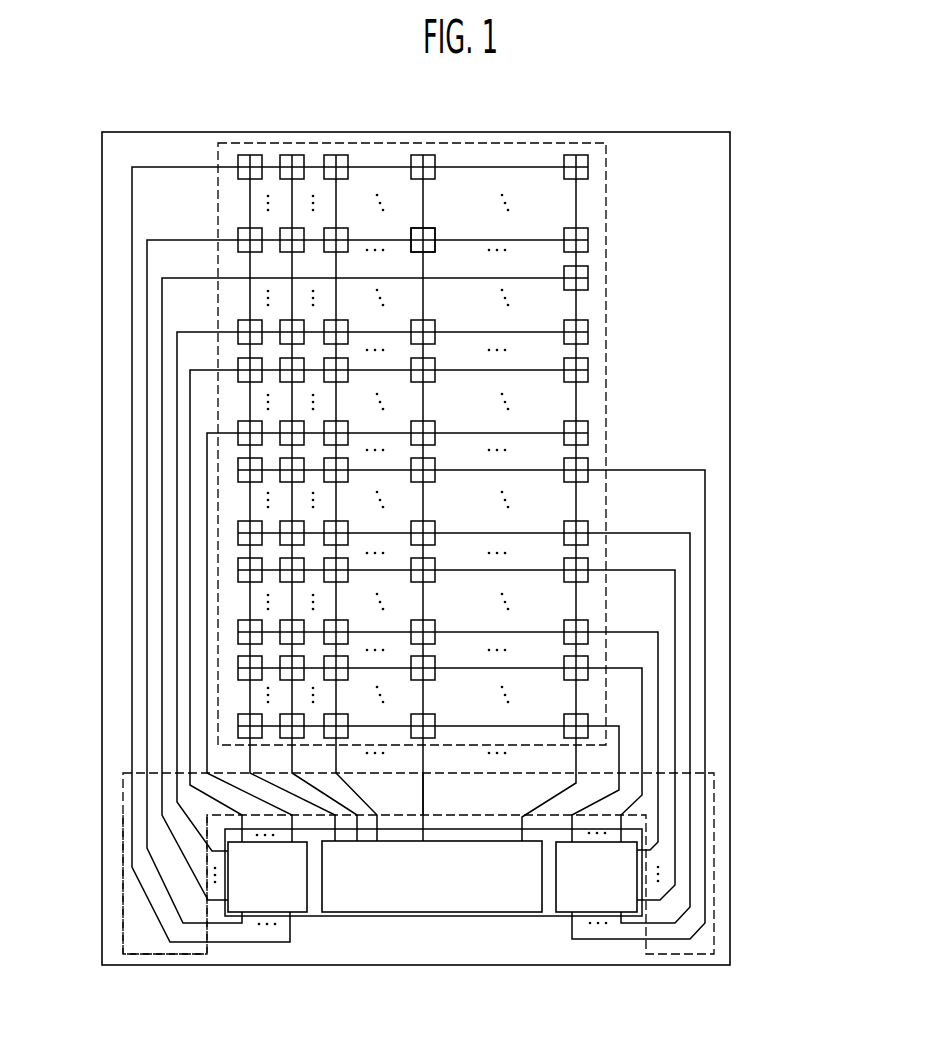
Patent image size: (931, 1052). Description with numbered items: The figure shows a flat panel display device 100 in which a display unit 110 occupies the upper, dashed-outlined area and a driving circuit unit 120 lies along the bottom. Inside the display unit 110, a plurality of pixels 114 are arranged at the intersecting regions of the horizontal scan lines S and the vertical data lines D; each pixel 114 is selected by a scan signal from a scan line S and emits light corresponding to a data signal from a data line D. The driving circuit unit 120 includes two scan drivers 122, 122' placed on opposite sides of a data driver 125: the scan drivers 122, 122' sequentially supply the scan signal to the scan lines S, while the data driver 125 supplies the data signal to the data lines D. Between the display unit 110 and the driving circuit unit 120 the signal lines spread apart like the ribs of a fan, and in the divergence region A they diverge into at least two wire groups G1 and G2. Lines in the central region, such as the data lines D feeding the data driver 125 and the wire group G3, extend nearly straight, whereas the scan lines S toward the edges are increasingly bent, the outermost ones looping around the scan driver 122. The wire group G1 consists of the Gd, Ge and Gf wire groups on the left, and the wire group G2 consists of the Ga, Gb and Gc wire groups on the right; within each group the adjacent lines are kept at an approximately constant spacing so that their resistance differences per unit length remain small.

The flat panel display device 100 is at (730, 290).
The display unit 110 is at (606, 290).
The pixel 114 is at (434, 228).
The driving circuit unit 120 is at (485, 917).
The scan driver 122 is at (268, 925).
The scan driver 122' is at (596, 924).
The data driver 125 is at (430, 915).
The scan line S is at (471, 166).
The data line D is at (425, 298).
The first wire group G1 is at (133, 929).
The second wire group G2 is at (708, 938).
The wire group G3 is at (433, 794).
The Ga wire group Ga is at (645, 796).
The Gb wire group Gb is at (676, 839).
The Gc wire group Gc is at (707, 900).
The Gd wire group Gd is at (172, 816).
The Ge wire group Ge is at (148, 848).
The Gf wire group Gf is at (147, 897).
The divergence region A is at (170, 957).